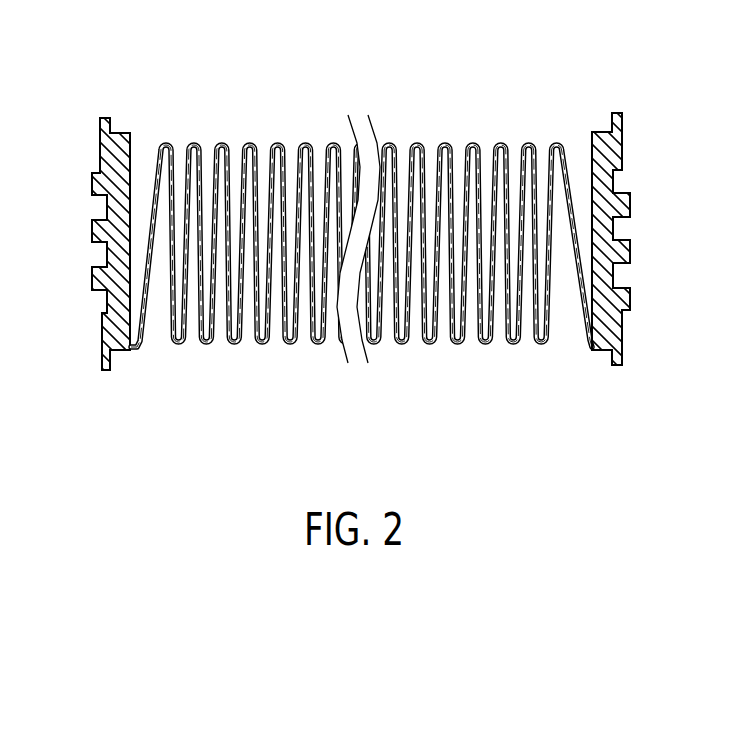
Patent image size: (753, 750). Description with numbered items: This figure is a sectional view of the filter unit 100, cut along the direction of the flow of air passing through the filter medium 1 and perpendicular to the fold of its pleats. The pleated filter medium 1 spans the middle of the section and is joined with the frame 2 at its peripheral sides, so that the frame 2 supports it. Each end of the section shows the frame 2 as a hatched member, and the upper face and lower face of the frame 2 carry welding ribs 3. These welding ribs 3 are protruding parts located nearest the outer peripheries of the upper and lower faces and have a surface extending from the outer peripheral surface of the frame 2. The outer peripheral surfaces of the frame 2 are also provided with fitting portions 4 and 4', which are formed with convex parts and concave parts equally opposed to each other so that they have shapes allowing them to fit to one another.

The filter unit 100 is at (98, 80).
The filter medium 1 is at (452, 143).
The frame 2 is at (610, 323).
The welding rib 3 is at (623, 120).
The fitting portion 4 is at (647, 245).
The fitting portion 4' is at (85, 244).